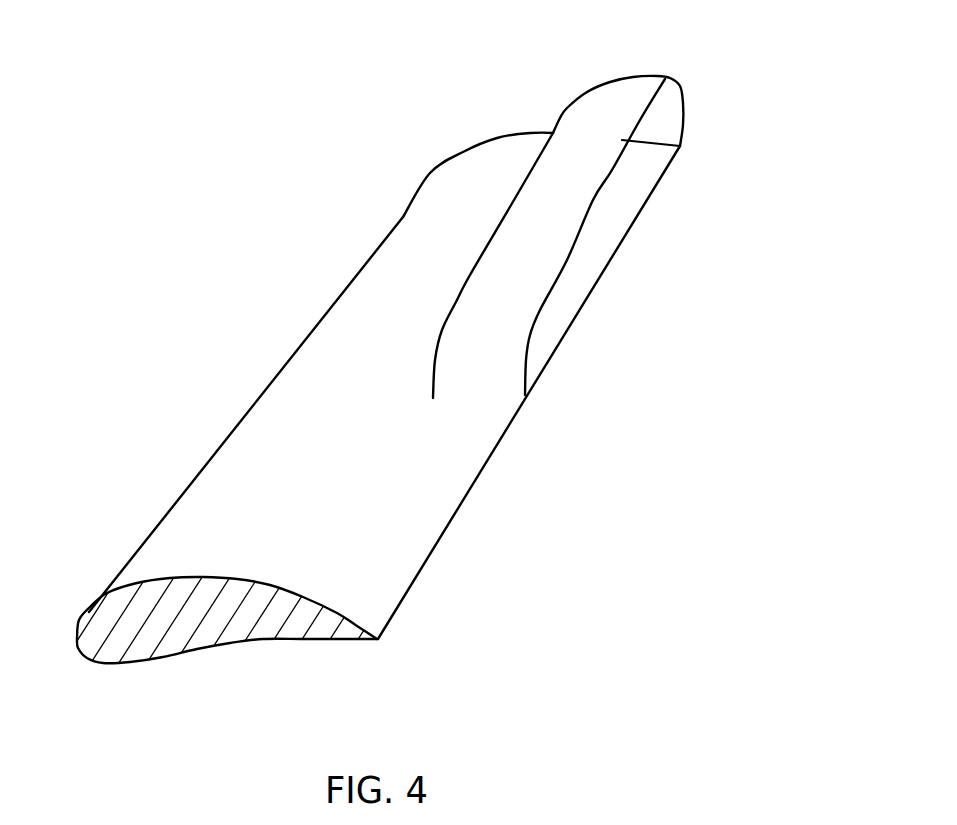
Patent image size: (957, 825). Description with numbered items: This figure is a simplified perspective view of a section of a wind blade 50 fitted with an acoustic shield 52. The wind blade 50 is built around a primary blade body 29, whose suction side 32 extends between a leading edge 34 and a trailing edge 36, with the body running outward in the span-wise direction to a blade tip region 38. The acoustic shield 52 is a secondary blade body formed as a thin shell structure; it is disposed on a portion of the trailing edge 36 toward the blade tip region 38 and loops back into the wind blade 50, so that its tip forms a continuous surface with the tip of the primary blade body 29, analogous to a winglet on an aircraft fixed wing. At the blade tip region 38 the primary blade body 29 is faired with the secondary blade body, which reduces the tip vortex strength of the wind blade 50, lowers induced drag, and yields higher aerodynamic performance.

The wind blade 50 is at (108, 138).
The suction side 32 is at (345, 332).
The leading edge 34 is at (227, 433).
The trailing edge 36 is at (413, 582).
The blade tip region 38 is at (483, 157).
The acoustic shield 52 is at (635, 84).
The primary blade body 29 is at (118, 628).